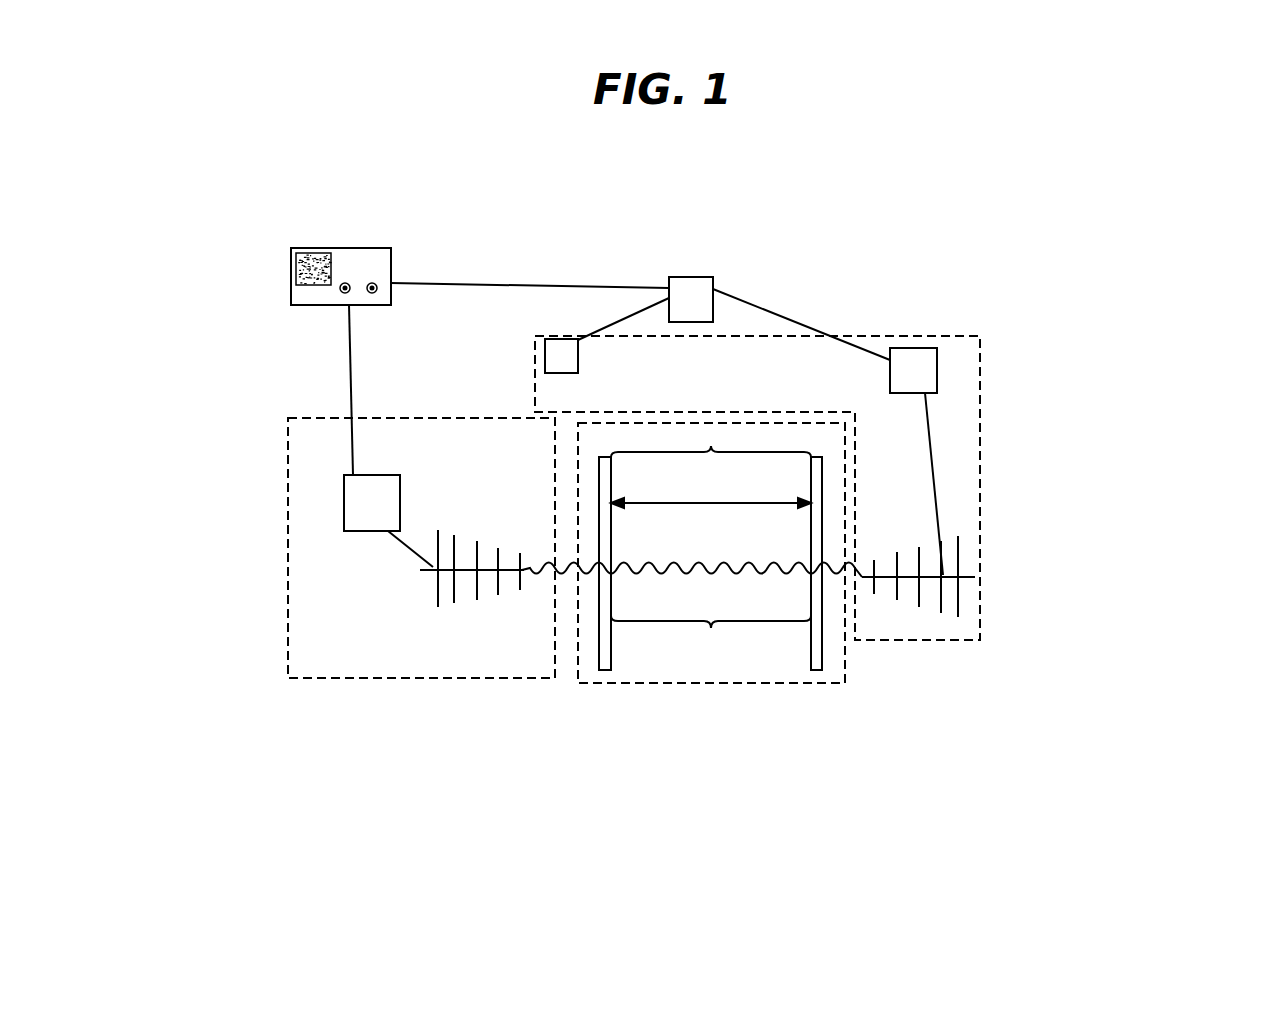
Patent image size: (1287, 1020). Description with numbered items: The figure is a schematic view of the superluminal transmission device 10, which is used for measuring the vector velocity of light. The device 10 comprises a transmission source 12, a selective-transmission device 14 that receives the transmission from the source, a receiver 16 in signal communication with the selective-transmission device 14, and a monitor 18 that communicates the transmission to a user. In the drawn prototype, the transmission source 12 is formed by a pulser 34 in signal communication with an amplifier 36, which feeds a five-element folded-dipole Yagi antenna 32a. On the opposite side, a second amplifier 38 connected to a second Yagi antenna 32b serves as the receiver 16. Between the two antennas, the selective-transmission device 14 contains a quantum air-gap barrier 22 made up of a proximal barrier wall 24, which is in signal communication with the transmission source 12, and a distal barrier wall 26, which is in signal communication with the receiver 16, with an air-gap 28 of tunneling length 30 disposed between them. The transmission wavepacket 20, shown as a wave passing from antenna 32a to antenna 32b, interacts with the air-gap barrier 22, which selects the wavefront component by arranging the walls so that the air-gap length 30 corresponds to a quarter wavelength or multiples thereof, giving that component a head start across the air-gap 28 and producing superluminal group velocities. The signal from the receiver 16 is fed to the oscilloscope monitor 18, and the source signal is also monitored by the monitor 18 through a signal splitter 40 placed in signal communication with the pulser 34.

The superluminal transmission device 10 is at (887, 203).
The transmission source 12 is at (998, 493).
The selective-transmission device 14 is at (686, 702).
The receiver 16 is at (362, 698).
The monitor 18 is at (340, 248).
The transmission wavepacket 20 is at (735, 575).
The quantum air-gap barrier 22 is at (711, 440).
The proximal barrier wall 24 is at (812, 670).
The distal barrier wall 26 is at (600, 672).
The air-gap 28 is at (711, 641).
The air-gap length 30 is at (705, 490).
The Yagi antenna 32a is at (888, 575).
The second Yagi antenna 32b is at (519, 573).
The pulser 34 is at (557, 354).
The amplifier 36 is at (913, 360).
The second amplifier 38 is at (353, 508).
The signal splitter 40 is at (692, 277).